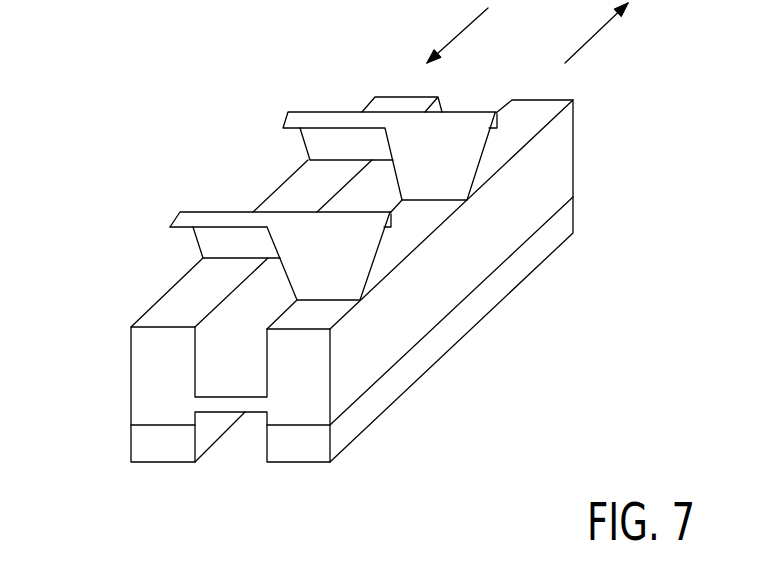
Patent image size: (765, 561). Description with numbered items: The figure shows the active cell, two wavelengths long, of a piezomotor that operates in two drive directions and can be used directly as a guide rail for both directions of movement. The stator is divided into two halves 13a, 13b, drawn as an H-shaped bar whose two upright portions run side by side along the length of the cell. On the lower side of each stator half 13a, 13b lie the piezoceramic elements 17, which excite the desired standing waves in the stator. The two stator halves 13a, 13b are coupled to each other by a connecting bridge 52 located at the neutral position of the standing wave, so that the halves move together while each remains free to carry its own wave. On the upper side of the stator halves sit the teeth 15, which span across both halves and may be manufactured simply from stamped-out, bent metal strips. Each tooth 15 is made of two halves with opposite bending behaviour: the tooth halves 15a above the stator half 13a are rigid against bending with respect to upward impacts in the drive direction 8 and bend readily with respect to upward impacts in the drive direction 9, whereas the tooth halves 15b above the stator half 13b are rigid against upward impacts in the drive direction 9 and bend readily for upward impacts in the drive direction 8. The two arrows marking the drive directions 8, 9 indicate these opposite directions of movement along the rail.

The drive direction 8 is at (596, 33).
The drive direction 9 is at (457, 35).
The stator half 13a is at (565, 156).
The stator half 13b is at (148, 362).
The teeth 15 is at (307, 115).
The tooth halves 15a is at (392, 214).
The tooth halves 15b is at (225, 210).
The piezoceramic elements 17 is at (148, 443).
The connecting bridge 52 is at (257, 416).